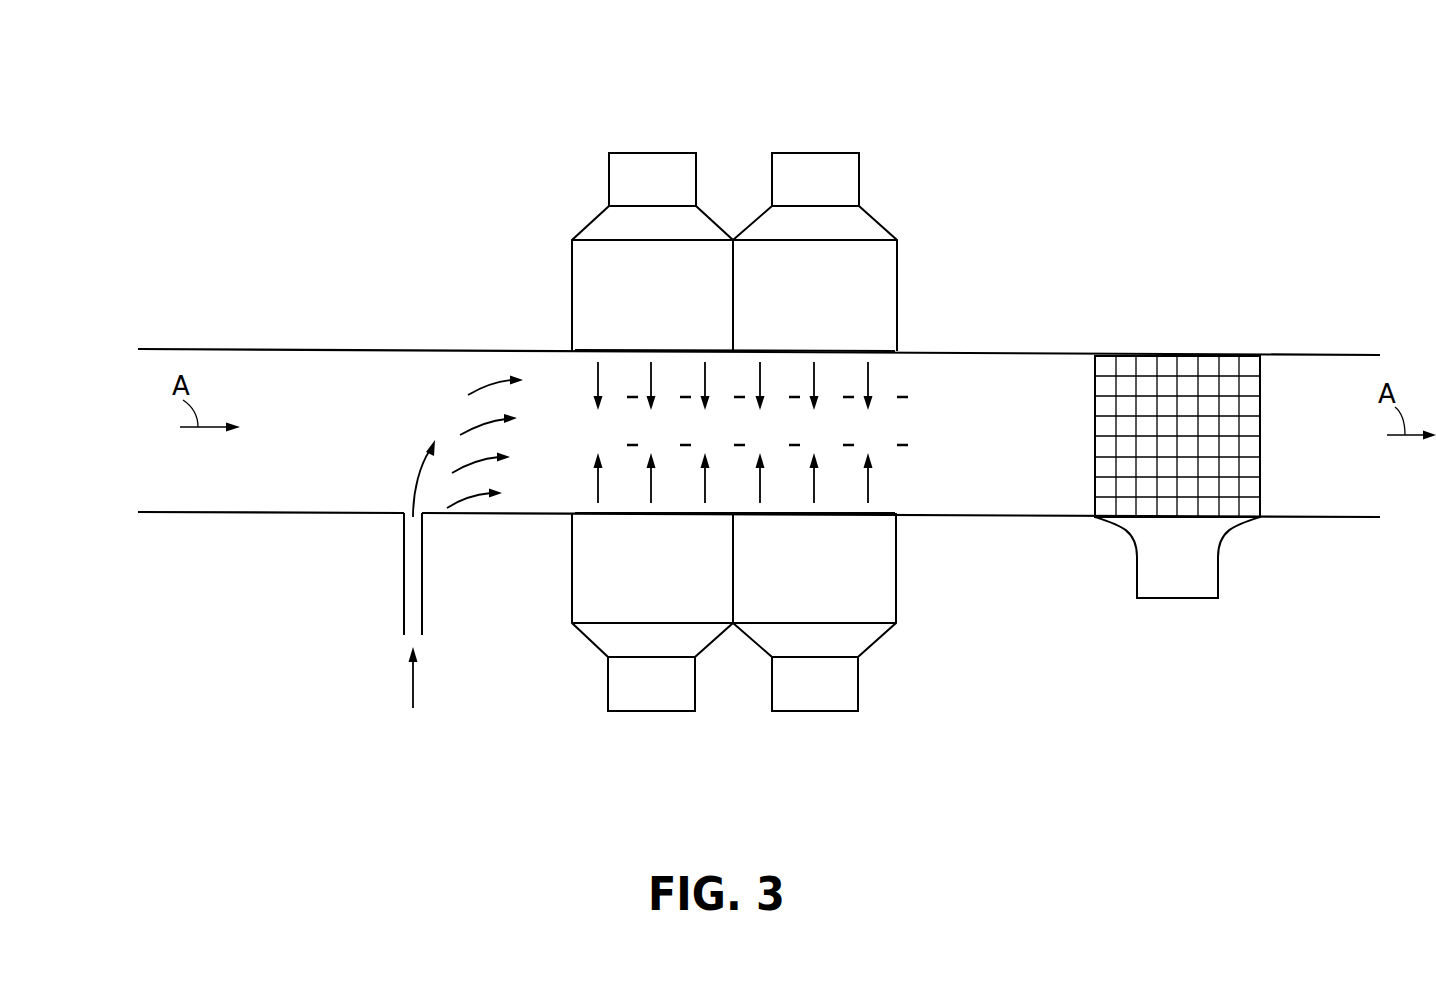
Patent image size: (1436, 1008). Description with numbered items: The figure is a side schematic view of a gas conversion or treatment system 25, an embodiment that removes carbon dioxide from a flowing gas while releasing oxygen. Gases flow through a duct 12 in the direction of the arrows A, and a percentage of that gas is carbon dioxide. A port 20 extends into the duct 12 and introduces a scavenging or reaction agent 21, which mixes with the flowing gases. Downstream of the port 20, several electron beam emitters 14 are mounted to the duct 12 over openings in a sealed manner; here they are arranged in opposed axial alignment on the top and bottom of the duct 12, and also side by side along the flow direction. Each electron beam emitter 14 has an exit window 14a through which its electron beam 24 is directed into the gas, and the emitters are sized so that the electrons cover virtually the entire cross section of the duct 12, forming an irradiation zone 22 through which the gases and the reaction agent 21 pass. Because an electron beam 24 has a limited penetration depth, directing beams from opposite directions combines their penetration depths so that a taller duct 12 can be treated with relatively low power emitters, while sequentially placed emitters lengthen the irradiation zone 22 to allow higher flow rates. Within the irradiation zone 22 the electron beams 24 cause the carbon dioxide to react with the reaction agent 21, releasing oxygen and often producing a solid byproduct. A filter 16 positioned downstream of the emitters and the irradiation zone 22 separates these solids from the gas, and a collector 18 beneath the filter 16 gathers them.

The duct 12 is at (377, 349).
The electron beam emitter 14 is at (635, 160).
The exit window 14a is at (601, 350).
The filter 16 is at (1167, 403).
The collector 18 is at (1202, 560).
The port 20 is at (415, 589).
The reaction agent 21 is at (478, 388).
The irradiation zone 22 is at (885, 437).
The electron beam 24 is at (655, 367).
The gas conversion system 25 is at (992, 188).